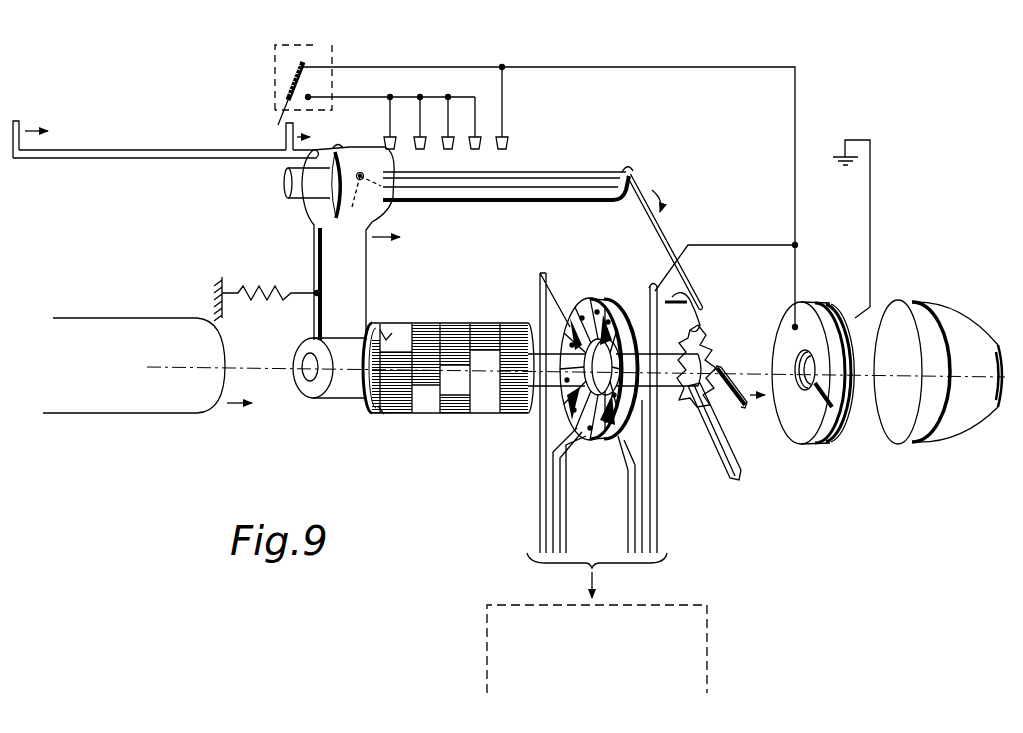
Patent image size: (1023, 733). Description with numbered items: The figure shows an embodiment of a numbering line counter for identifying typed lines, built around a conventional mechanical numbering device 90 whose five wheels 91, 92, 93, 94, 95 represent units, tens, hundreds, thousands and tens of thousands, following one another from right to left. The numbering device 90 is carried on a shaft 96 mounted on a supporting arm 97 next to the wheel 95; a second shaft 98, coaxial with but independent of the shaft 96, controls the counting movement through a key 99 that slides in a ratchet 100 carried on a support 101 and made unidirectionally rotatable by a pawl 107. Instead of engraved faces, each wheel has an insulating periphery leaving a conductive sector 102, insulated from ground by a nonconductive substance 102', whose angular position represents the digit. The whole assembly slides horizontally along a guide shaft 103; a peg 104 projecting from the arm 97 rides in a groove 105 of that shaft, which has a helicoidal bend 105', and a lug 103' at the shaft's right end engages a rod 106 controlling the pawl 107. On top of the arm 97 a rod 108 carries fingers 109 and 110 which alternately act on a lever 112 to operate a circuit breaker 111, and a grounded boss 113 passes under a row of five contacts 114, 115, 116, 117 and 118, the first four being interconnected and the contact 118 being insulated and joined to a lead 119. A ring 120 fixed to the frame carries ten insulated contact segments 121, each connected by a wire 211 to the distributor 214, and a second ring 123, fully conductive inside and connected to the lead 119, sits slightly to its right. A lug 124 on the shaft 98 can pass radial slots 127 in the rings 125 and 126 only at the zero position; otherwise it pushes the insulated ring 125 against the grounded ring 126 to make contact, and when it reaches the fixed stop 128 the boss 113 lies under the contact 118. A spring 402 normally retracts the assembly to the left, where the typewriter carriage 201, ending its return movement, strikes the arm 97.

The numbering device 90 is at (357, 410).
The units wheel 91 is at (520, 413).
The tens wheel 92 is at (484, 413).
The hundreds wheel 93 is at (450, 411).
The thousands wheel 94 is at (420, 411).
The tens-of-thousands wheel 95 is at (380, 413).
The shaft 96 is at (305, 365).
The supporting arm 97 is at (338, 358).
The second shaft 98 is at (560, 362).
The key 99 is at (585, 357).
The ratchet 100 is at (697, 400).
The support 101 is at (740, 440).
The conductive sector 102 is at (351, 243).
The nonconductive substance 102' is at (405, 376).
The guide shaft 103 is at (264, 196).
The lug 103' is at (616, 161).
The peg 104 is at (364, 174).
The groove 105 is at (506, 169).
The helicoidal bend 105' is at (359, 200).
The rod 106 is at (648, 190).
The pawl 107 is at (707, 303).
The rod 108 is at (88, 152).
The finger 109 is at (20, 133).
The finger 110 is at (286, 137).
The circuit breaker 111 is at (321, 47).
The lever 112 is at (277, 125).
The grounded boss 113 is at (338, 145).
The contact 114 is at (392, 136).
The contact 115 is at (422, 136).
The contact 116 is at (450, 136).
The contact 117 is at (478, 136).
The contact 118 is at (504, 136).
The lead 119 is at (794, 160).
The ring 120 is at (585, 294).
The contact segments 121 is at (582, 427).
The second ring 123 is at (618, 296).
The lug 124 is at (726, 366).
The ring 125 is at (810, 432).
The ring 126 is at (847, 430).
The radial slots 127 is at (827, 408).
The fixed stop 128 is at (903, 423).
The typewriter carriage 201 is at (153, 332).
The wire 211 is at (565, 480).
The distributor 214 is at (607, 650).
The spring 402 is at (240, 288).